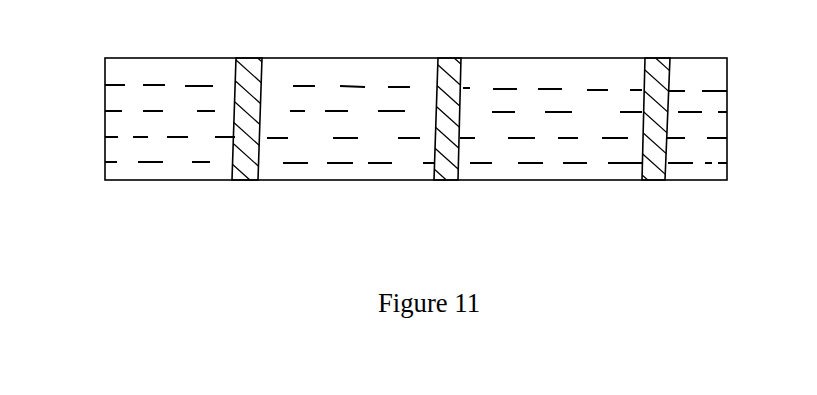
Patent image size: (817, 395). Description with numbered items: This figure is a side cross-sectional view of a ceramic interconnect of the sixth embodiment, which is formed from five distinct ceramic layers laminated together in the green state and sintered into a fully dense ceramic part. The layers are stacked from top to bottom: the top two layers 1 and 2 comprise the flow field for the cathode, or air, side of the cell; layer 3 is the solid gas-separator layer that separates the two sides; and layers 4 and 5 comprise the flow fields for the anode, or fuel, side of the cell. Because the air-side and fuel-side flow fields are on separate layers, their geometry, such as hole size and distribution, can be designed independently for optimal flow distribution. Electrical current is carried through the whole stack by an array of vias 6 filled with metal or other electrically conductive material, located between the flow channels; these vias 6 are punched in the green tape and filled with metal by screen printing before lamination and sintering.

The first ceramic layer 1 is at (727, 73).
The second ceramic layer 2 is at (727, 105).
The solid gas-separator layer 3 is at (727, 130).
The fourth ceramic layer 4 is at (727, 155).
The fifth ceramic layer 5 is at (727, 178).
The conductive material filled vias 6 is at (248, 58).